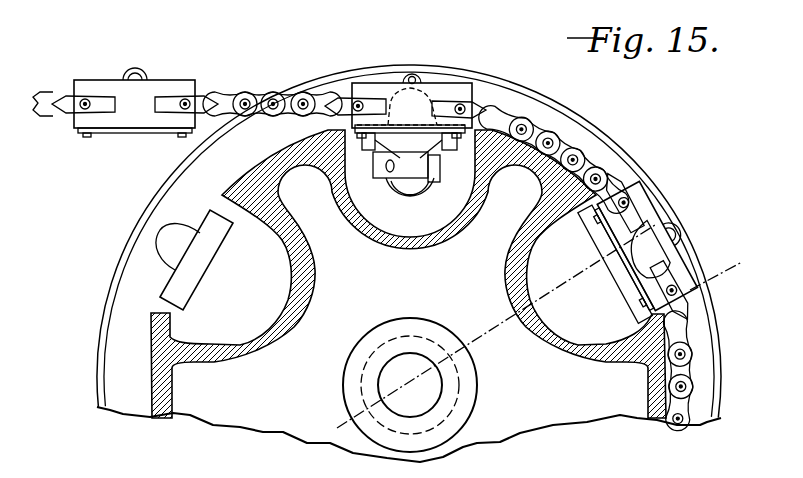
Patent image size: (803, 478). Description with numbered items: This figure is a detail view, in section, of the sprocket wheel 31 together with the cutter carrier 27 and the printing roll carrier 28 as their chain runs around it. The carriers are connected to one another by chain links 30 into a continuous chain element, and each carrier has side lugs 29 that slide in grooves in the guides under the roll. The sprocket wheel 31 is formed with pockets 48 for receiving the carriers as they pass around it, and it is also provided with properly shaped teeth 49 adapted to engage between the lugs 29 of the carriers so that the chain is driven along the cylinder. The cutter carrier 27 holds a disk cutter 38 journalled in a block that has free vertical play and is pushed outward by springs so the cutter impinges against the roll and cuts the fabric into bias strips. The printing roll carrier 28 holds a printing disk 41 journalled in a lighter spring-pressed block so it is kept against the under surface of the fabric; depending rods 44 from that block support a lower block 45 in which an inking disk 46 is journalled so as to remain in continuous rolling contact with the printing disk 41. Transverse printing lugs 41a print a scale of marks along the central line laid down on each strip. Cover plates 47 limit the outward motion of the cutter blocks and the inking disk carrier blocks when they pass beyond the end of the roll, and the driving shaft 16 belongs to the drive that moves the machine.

The driving shaft 16 is at (430, 343).
The cutter carrier 27 is at (99, 81).
The printing roll carrier 28 is at (450, 92).
The side lug 29 is at (160, 108).
The chain link 30 is at (42, 118).
The sprocket wheel 31 is at (101, 298).
The disk cutter 38 is at (140, 73).
The printing disk 41 is at (415, 81).
The transverse printing lug 41a is at (410, 79).
The depending rod 44 is at (370, 148).
The lower block 45 is at (387, 174).
The inking disk 46 is at (421, 189).
The cover plate 47 is at (127, 133).
The pocket 48 is at (287, 265).
The tooth 49 is at (622, 253).